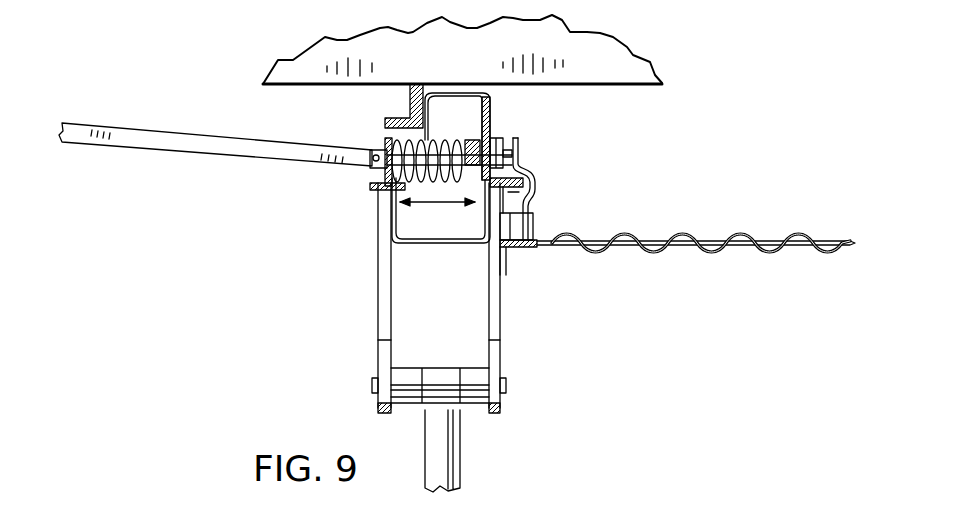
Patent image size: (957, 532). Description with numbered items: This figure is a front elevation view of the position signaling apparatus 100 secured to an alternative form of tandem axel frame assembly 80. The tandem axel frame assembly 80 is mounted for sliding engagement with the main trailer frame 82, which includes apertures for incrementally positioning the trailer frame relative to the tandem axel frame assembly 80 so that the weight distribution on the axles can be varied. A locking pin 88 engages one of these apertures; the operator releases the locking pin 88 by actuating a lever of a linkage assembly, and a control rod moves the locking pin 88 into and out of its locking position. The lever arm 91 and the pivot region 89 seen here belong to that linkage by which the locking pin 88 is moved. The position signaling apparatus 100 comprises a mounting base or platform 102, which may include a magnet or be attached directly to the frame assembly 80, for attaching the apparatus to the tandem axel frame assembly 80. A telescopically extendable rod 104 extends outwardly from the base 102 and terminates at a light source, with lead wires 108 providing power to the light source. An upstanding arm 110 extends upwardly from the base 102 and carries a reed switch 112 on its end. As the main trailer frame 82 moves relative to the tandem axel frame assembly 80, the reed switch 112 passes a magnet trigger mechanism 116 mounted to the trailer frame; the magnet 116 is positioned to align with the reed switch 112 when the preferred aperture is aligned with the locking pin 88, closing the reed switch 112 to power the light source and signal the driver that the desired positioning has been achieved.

The tandem axel frame assembly 80 is at (503, 340).
The main trailer frame 82 is at (405, 116).
The locking pin 88 is at (470, 148).
The pivot 89 is at (383, 181).
The bar 91 is at (123, 137).
The position signaling apparatus 100 is at (542, 234).
The mounting base or platform 102 is at (510, 252).
The telescopically extendable rod 104 is at (713, 240).
The lead wires 108 is at (804, 236).
The upstanding arm 110 is at (537, 180).
The reed switch 112 is at (521, 140).
The magnet trigger mechanism 116 is at (509, 140).